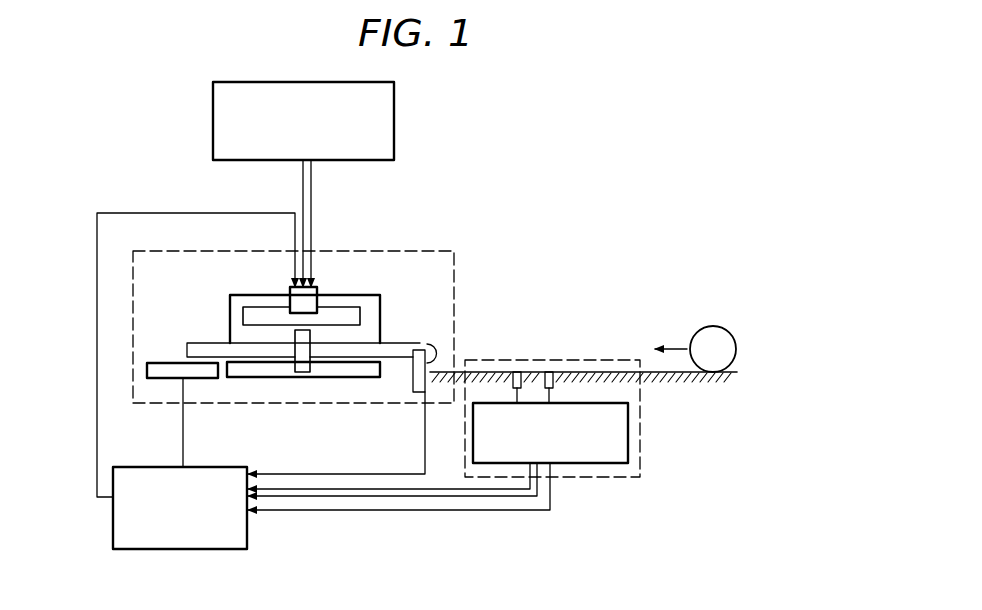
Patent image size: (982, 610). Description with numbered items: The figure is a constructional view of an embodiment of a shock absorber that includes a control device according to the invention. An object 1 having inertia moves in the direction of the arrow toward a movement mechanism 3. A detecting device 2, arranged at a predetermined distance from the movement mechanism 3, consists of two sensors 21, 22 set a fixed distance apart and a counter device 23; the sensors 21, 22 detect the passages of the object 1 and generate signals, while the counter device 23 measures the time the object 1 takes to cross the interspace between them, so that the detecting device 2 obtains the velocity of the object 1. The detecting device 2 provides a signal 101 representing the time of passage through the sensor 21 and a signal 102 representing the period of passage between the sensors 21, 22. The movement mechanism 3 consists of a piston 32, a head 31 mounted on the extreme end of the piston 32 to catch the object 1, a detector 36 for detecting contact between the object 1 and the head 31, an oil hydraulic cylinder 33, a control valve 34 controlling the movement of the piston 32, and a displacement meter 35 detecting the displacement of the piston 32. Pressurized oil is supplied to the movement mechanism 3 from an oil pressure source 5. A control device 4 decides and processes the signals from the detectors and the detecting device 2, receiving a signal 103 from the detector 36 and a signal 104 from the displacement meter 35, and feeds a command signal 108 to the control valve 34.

The object 1 is at (713, 326).
The detecting device 2 is at (593, 360).
The movement mechanism 3 is at (375, 251).
The control device 4 is at (177, 549).
The oil pressure source 5 is at (213, 114).
The sensor 21 is at (553, 388).
The sensor 22 is at (513, 388).
The counter device 23 is at (613, 477).
The head 31 is at (430, 350).
The piston 32 is at (398, 343).
The oil hydraulic cylinder 33 is at (300, 375).
The control valve 34 is at (317, 296).
The displacement meter 35 is at (165, 363).
The detector 36 is at (430, 356).
The signal 101 is at (532, 511).
The signal 102 is at (437, 497).
The signal 103 is at (363, 474).
The signal 104 is at (183, 460).
The command signal 108 is at (97, 410).